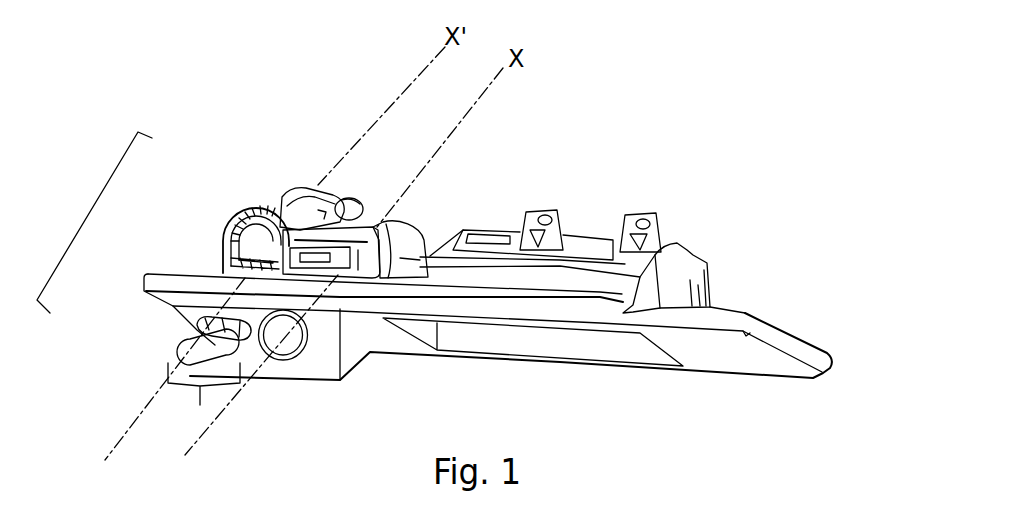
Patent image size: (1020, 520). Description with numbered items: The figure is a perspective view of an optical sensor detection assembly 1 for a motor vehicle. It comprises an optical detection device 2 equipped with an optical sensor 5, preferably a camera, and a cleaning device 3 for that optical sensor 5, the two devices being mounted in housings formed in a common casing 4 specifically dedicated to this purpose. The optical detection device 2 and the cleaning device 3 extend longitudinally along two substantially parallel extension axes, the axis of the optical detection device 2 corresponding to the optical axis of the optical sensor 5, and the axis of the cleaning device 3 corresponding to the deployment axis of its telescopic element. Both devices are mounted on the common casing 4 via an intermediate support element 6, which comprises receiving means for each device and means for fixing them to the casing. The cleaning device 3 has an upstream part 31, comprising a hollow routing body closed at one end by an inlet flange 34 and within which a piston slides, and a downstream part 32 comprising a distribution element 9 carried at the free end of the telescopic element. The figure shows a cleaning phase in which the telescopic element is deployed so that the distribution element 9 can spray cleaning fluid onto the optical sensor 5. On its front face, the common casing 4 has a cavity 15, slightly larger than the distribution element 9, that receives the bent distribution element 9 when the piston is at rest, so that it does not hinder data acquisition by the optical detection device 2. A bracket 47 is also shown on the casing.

The optical sensor detection assembly 1 is at (598, 100).
The optical detection device 2 is at (289, 230).
The cleaning device 3 is at (82, 217).
The common casing 4 is at (762, 296).
The optical sensor 5 is at (300, 350).
The intermediate support element 6 is at (434, 233).
The distribution element 9 is at (204, 397).
The cavity 15 is at (246, 334).
The upstream part 31 is at (237, 202).
The downstream part 32 is at (157, 337).
The inlet flange 34 is at (313, 186).
The bracket 47 is at (503, 237).